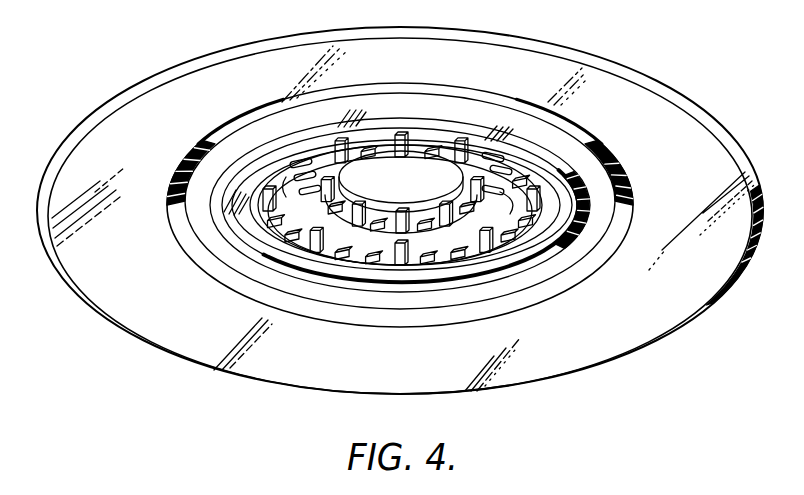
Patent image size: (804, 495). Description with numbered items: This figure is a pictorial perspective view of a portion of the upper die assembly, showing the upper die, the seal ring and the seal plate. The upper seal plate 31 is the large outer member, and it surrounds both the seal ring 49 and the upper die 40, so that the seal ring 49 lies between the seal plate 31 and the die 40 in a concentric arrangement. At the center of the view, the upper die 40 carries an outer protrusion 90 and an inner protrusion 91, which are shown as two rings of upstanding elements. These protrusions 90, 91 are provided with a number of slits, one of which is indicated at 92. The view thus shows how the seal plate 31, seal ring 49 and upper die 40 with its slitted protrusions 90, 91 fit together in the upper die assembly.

The upper seal plate 31 is at (562, 378).
The seal ring 49 is at (277, 163).
The upper die 40 is at (419, 143).
The outer protrusion 90 is at (387, 263).
The inner protrusion 91 is at (383, 244).
The slit 92 is at (398, 163).